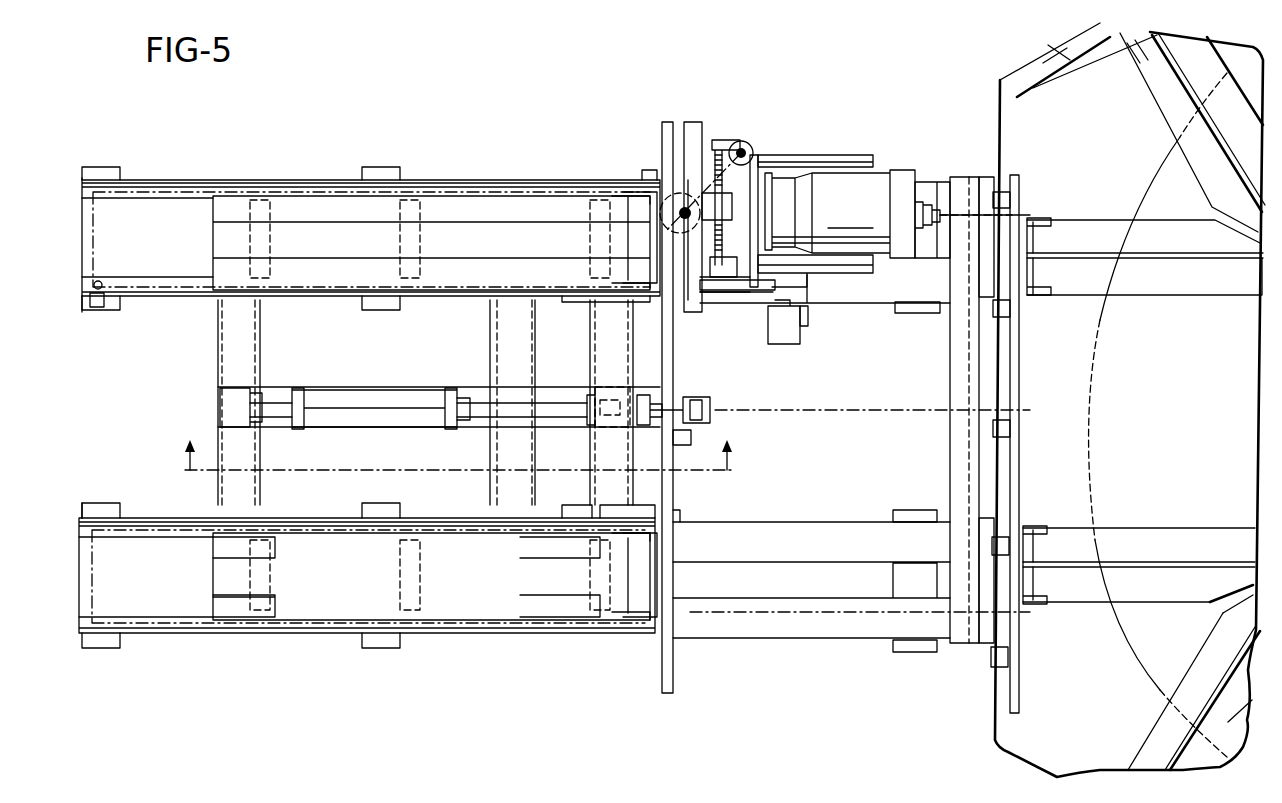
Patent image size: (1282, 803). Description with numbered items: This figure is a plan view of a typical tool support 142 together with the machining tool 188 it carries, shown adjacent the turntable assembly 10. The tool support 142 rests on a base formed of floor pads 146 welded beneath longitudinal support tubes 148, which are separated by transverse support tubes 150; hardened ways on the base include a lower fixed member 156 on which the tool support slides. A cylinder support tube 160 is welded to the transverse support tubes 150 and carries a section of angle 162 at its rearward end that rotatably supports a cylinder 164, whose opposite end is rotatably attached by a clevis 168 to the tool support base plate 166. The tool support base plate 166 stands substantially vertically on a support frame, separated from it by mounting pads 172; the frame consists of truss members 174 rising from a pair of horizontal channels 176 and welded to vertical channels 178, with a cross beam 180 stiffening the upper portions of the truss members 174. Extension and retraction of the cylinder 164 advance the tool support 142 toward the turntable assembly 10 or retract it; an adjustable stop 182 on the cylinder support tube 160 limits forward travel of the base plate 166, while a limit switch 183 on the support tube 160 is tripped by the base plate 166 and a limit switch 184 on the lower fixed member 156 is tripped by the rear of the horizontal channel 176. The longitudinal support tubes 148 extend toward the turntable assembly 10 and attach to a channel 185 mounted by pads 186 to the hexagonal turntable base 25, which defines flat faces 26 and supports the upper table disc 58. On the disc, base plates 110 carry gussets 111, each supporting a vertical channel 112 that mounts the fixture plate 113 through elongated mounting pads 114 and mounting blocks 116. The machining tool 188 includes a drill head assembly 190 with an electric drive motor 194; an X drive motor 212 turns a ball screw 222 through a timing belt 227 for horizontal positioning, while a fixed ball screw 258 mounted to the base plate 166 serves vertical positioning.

The turntable assembly 10 is at (1228, 380).
The hexagonal turntable base 25 is at (1002, 102).
The flat faces 26 is at (1017, 83).
The upper table disc 58 is at (1152, 640).
The base plates 110 is at (1213, 172).
The gussets 111 is at (1175, 76).
The vertical channel 112 is at (1133, 56).
The fixture plate 113 is at (1040, 84).
The elongated mounting pads 114 is at (1033, 276).
The mounting blocks 116 is at (1033, 240).
The tool support 142 is at (472, 162).
The floor pads 146 is at (112, 172).
The longitudinal support tubes 148 is at (925, 188).
The transverse support tubes 150 is at (250, 334).
The lower fixed member 156 is at (157, 283).
The cylinder support tube 160 is at (365, 390).
The section of angle 162 is at (224, 402).
The cylinder 164 is at (340, 405).
The tool support base plate 166 is at (670, 366).
The clevis 168 is at (605, 425).
The mounting pads 172 is at (658, 242).
The truss members 174 is at (330, 265).
The horizontal channels 176 is at (500, 249).
The vertical channels 178 is at (642, 190).
The cross beam 180 is at (605, 345).
The adjustable stop 182 is at (700, 400).
The limit switch 183 is at (705, 455).
The limit switch 184 is at (97, 308).
The channel 185 is at (960, 366).
The pads 186 is at (990, 177).
The machining tool 188 is at (760, 112).
The drill head assembly 190 is at (862, 132).
The electric drive motor 194 is at (838, 185).
The X drive motor 212 is at (805, 330).
The ball screw 222 is at (728, 250).
The timing belt 227 is at (780, 335).
The fixed ball screw 258 is at (690, 208).